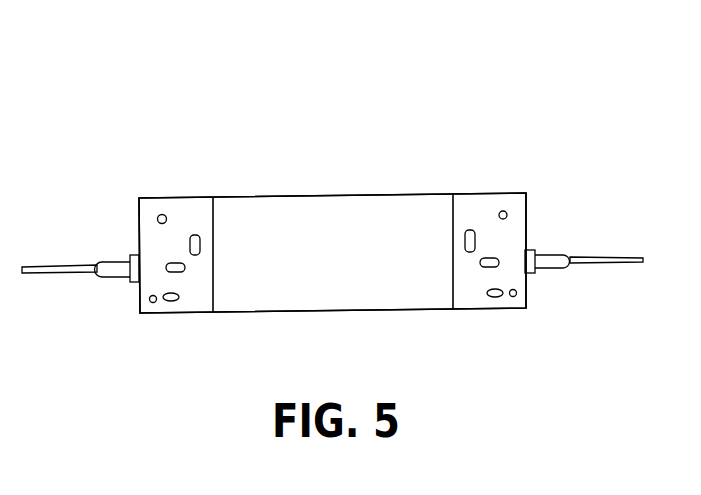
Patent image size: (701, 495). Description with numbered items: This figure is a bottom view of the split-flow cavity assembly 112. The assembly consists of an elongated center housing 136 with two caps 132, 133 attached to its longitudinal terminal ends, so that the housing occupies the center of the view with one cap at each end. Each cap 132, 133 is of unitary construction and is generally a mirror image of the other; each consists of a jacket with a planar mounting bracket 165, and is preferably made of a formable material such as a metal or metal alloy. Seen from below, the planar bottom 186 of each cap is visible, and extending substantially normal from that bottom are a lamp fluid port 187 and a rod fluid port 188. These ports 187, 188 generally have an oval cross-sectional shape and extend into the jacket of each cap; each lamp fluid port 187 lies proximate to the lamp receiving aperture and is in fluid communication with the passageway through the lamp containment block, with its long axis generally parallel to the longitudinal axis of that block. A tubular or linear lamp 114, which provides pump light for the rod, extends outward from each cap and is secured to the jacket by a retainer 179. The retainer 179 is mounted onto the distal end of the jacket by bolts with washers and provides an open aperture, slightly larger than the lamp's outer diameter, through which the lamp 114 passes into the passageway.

The cavity assembly 112 is at (434, 187).
The lamp 114 is at (108, 265).
The cap 132 is at (180, 205).
The cap 133 is at (518, 230).
The center housing 136 is at (329, 305).
The planar mounting bracket 165 is at (149, 202).
The retainer 179 is at (130, 283).
The planar bottom 186 is at (481, 294).
The lamp fluid port 187 is at (185, 272).
The rod fluid port 188 is at (202, 240).